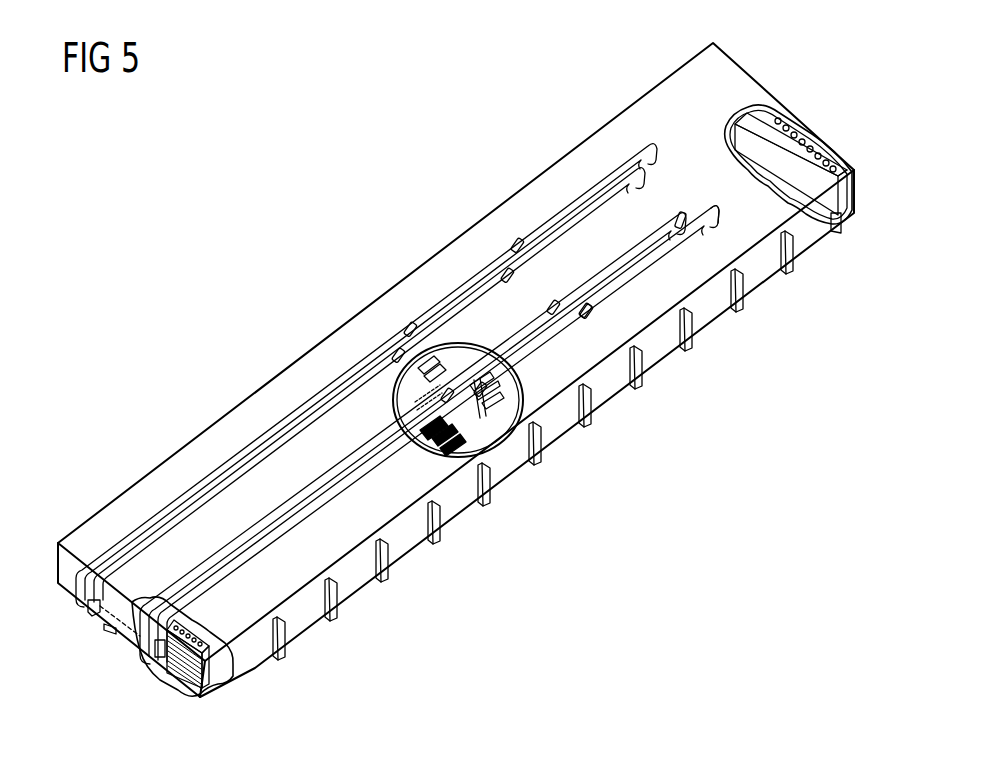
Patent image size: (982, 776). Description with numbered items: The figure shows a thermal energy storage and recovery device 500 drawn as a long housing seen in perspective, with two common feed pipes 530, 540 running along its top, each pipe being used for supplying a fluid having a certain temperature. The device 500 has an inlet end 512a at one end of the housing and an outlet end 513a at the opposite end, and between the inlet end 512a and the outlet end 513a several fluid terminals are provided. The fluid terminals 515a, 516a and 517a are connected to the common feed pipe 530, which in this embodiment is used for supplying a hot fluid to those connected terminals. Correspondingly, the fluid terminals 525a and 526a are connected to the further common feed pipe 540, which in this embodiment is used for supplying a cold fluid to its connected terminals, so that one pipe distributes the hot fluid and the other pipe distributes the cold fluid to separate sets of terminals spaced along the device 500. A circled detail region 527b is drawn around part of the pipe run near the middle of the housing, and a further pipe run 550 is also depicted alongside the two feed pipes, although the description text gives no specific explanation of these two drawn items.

The thermal energy storage and recovery device 500 is at (303, 262).
The inlet end 512a is at (154, 686).
The outlet end 513a is at (808, 94).
The fluid terminal 515a is at (719, 218).
The fluid terminal 516a is at (588, 315).
The fluid terminal 517a is at (488, 396).
The fluid terminal 525a is at (680, 213).
The fluid terminal 526a is at (553, 300).
The connection detail 527b is at (510, 386).
The common feed pipe 530 is at (345, 487).
The further common feed pipe 540 is at (293, 508).
The upper cable pair 550 is at (366, 375).